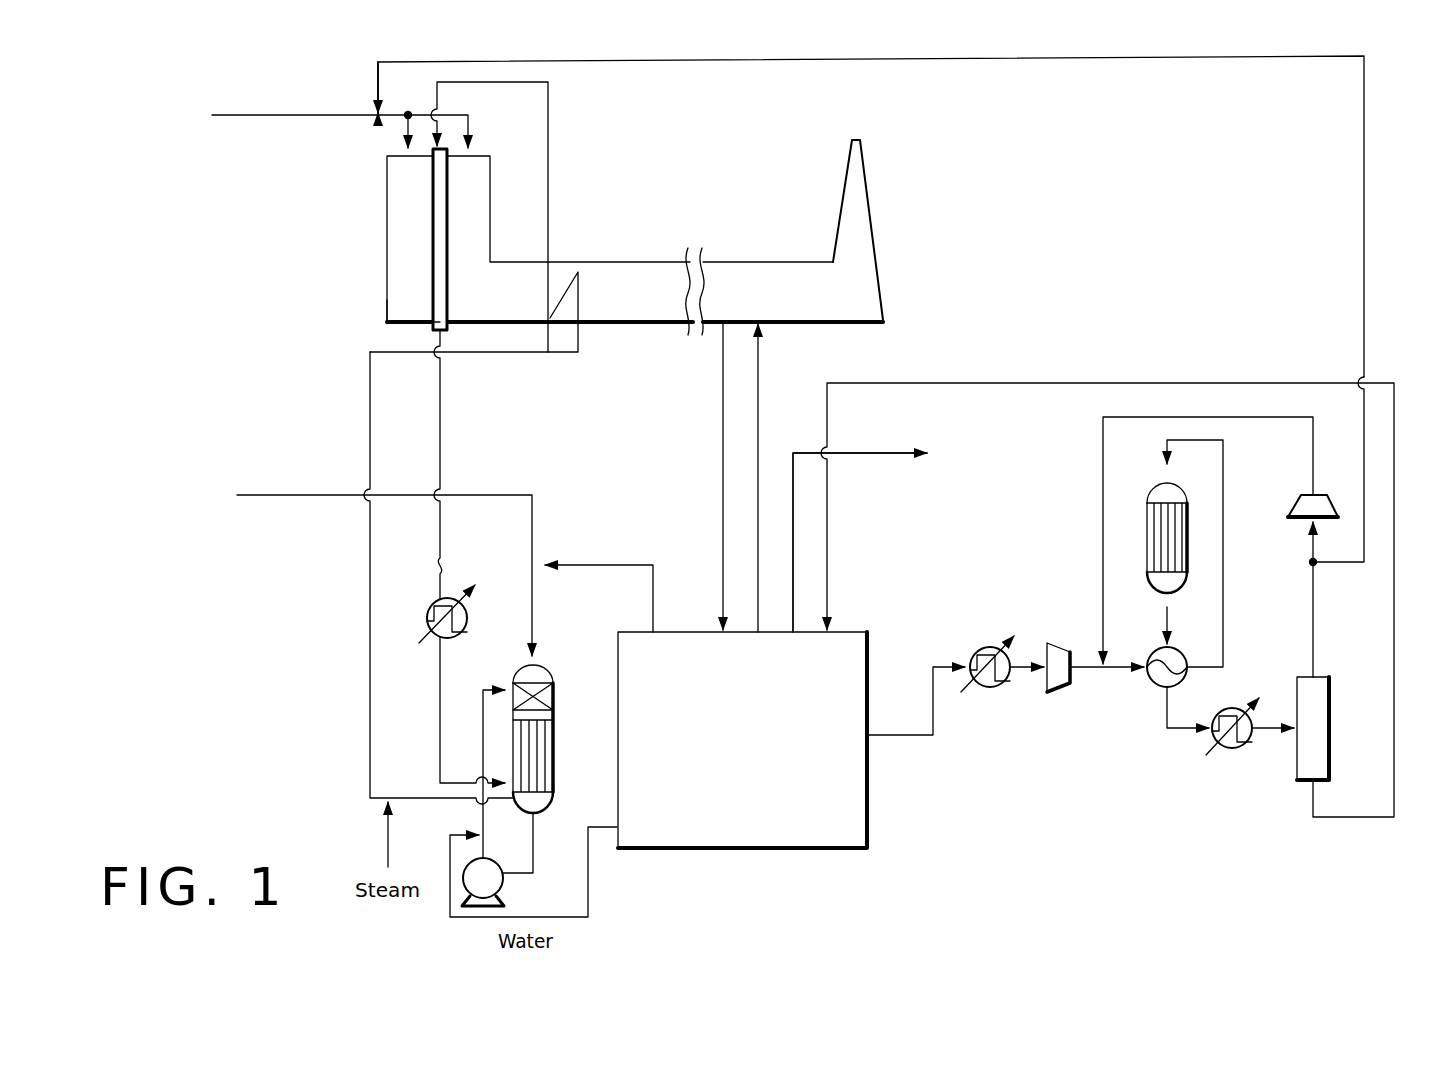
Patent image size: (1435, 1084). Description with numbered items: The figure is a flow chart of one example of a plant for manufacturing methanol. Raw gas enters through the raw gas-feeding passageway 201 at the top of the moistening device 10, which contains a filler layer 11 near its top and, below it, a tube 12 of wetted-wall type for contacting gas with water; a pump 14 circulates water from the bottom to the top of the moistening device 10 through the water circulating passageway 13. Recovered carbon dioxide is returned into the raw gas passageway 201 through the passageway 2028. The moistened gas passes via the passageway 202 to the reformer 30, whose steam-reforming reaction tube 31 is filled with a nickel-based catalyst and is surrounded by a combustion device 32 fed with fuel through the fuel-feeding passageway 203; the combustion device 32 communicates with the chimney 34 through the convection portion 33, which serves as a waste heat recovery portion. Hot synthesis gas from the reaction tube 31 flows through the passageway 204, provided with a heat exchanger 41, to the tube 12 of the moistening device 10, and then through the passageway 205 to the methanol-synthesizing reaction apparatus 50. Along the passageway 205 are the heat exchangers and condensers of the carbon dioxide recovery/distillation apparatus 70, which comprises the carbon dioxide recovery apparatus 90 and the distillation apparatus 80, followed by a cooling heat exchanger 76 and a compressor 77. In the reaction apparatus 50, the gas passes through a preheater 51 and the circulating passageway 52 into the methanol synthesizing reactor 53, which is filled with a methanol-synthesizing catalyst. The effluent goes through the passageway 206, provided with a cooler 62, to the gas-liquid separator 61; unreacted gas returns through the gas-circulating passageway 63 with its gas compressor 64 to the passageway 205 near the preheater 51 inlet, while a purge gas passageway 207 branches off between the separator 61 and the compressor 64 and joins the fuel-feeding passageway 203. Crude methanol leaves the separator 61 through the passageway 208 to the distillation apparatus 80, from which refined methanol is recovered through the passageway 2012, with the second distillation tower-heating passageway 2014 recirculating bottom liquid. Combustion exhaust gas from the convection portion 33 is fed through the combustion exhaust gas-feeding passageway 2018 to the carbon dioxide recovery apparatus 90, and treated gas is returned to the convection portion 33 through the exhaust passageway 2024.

The moistening device 10 is at (538, 727).
The filler layer 11 is at (557, 672).
The tube of wetted-wall type 12 is at (550, 766).
The water circulating passageway 13 is at (535, 853).
The pump 14 is at (462, 909).
The reformer 30 is at (384, 217).
The steam-reforming reaction tube 31 is at (432, 253).
The combustion device 32 is at (389, 308).
The convection portion 33 is at (640, 274).
The chimney 34 is at (867, 195).
The heat exchanger 41 is at (438, 648).
The methanol-synthesizing reaction apparatus 50 is at (1184, 531).
The preheater 51 is at (1150, 681).
The circulating passageway 52 is at (1226, 598).
The methanol synthesizing reactor 53 is at (1153, 532).
The gas-liquid separator 61 is at (1293, 770).
The cooler 62 is at (1225, 752).
The gas-circulating passageway 63 is at (1312, 620).
The gas compressor 64 is at (1327, 493).
The carbon dioxide recovery/distillation apparatus 70 is at (742, 776).
The cooling heat exchanger 76 is at (985, 647).
The compressor 77 is at (1055, 693).
The distillation apparatus 80 is at (748, 801).
The carbon dioxide recovery apparatus 90 is at (747, 695).
The raw gas-feeding passageway 201 is at (267, 497).
The passageway 202 is at (371, 676).
The fuel-feeding passageway 203 is at (237, 117).
The passageway 204 is at (441, 427).
The passageway 205 is at (912, 735).
The passageway 206 is at (1176, 730).
The purge gas passageway 207 is at (1366, 185).
The passageway 208 is at (1144, 383).
The passageway for recovering refined methanol 2012 is at (868, 454).
The second distillation tower-heating passageway 2014 is at (860, 542).
The combustion exhaust gas-feeding passageway 2018 is at (722, 511).
The exhaust passageway 2024 is at (759, 376).
The passageway for passing recovered carbon dioxide 2028 is at (557, 558).